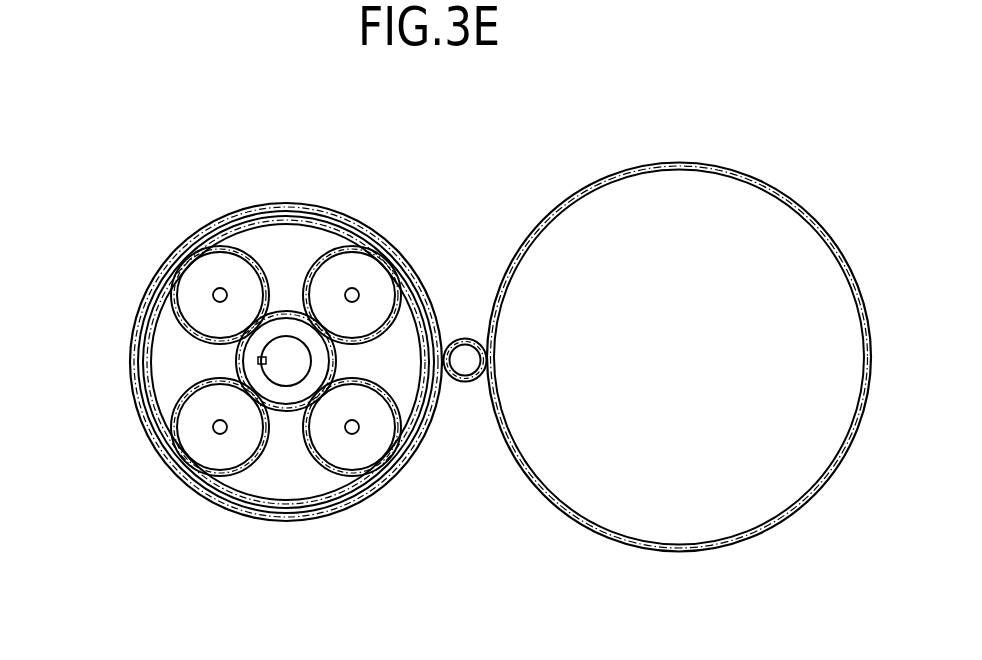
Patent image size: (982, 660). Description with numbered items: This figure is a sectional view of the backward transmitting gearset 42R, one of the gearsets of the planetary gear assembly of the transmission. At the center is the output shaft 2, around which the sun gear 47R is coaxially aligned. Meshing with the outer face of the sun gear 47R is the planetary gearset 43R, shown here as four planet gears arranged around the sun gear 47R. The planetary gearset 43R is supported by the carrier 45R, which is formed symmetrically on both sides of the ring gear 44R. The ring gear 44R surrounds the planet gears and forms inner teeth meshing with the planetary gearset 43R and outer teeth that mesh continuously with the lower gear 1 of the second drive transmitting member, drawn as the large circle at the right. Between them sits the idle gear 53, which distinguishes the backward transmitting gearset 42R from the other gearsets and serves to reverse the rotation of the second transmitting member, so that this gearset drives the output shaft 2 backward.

The lower gear 1 is at (768, 465).
The output shaft 2 is at (288, 375).
The backward transmitting gearset 42R is at (306, 381).
The planetary gearset 43R is at (197, 447).
The ring gear 44R is at (415, 286).
The carrier 45R is at (265, 480).
The sun gear 47R is at (279, 312).
The idle gear 53 is at (467, 362).